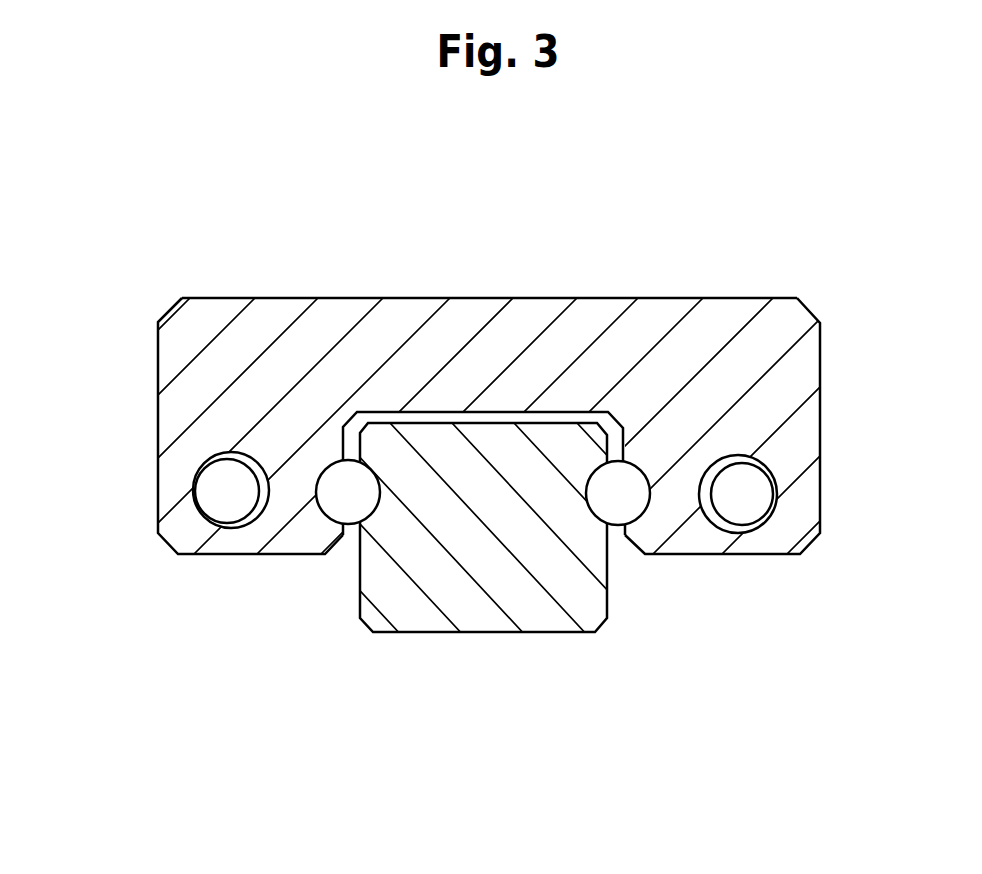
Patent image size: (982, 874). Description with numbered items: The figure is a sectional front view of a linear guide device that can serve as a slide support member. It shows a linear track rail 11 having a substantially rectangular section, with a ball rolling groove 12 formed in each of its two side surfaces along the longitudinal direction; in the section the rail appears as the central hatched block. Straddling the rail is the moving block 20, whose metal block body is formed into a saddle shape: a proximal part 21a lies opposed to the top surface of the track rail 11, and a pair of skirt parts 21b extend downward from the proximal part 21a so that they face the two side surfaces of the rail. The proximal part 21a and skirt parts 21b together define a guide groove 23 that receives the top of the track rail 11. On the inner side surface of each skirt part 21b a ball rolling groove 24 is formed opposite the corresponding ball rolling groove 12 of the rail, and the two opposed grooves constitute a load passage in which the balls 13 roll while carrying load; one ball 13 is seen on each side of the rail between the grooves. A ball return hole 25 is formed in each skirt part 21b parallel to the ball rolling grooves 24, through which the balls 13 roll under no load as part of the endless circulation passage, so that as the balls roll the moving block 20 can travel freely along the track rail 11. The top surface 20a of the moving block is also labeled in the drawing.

The track rail 11 is at (487, 600).
The ball rolling groove 12 is at (378, 478).
The ball 13 is at (483, 570).
The moving block 20 is at (491, 394).
The top surface of track rail 20a is at (477, 298).
The proximal part 21a is at (580, 320).
The skirt part 21b is at (802, 493).
The guide groove 23 is at (370, 413).
The ball rolling groove 24 is at (630, 480).
The ball return hole 25 is at (706, 502).